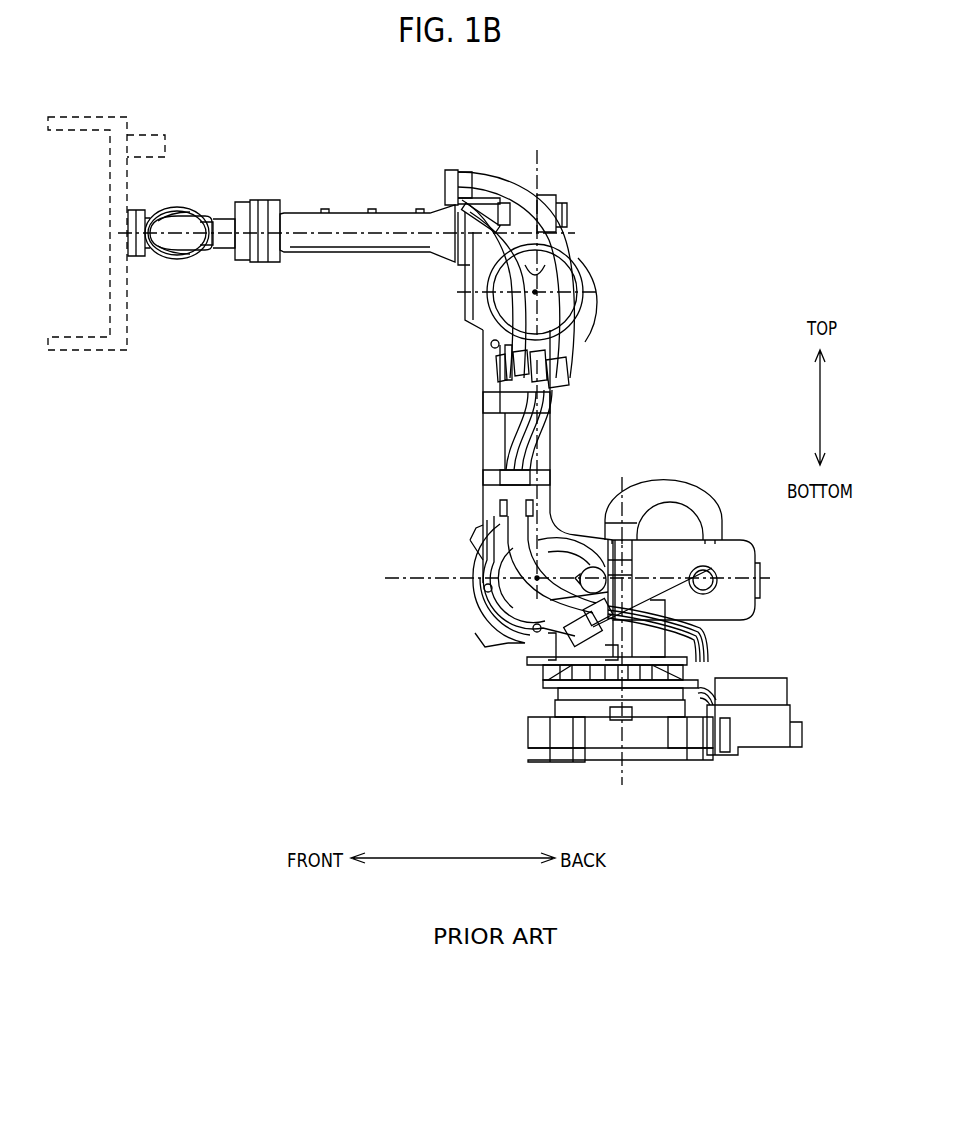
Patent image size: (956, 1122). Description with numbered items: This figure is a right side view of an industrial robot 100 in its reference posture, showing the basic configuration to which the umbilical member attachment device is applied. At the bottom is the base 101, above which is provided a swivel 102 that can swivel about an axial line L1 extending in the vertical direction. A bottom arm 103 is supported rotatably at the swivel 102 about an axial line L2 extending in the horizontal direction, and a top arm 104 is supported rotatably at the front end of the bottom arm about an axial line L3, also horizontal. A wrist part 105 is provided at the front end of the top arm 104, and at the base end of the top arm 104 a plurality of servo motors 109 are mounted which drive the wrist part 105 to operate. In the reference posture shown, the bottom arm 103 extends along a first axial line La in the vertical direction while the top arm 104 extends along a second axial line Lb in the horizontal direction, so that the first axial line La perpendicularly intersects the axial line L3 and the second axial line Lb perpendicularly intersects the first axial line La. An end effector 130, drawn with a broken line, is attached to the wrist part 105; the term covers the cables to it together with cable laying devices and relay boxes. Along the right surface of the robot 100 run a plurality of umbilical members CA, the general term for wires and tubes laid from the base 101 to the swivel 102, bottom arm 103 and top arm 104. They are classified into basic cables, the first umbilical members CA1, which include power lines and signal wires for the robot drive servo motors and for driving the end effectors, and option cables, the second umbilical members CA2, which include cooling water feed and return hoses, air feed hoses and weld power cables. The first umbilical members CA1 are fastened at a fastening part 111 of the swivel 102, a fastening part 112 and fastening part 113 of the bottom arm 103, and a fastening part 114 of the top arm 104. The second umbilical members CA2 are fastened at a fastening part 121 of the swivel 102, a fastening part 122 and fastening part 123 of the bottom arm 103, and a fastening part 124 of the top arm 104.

The industrial robot 100 is at (660, 194).
The base 101 is at (528, 733).
The swivel 102 is at (488, 644).
The bottom arm 103 is at (553, 442).
The top arm 104 is at (348, 210).
The wrist part 105 is at (184, 208).
The servo motors 109 is at (538, 194).
The fastening part 111 is at (582, 633).
The fastening part 112 is at (500, 505).
The fastening part 113 is at (493, 346).
The fastening part 114 is at (458, 212).
The fastening part 121 is at (592, 608).
The fastening part 122 is at (520, 478).
The fastening part 123 is at (560, 376).
The fastening part 124 is at (446, 169).
The end effector 130 is at (88, 352).
The umbilical members CA is at (672, 282).
The basic cables (first umbilical members) CA1 is at (575, 290).
The option cables (second umbilical members) CA2 is at (573, 336).
The axial line L1 is at (622, 801).
The axial line L2 is at (482, 578).
The axial line L3 is at (548, 290).
The first axial line La is at (565, 495).
The second axial line Lb is at (322, 240).